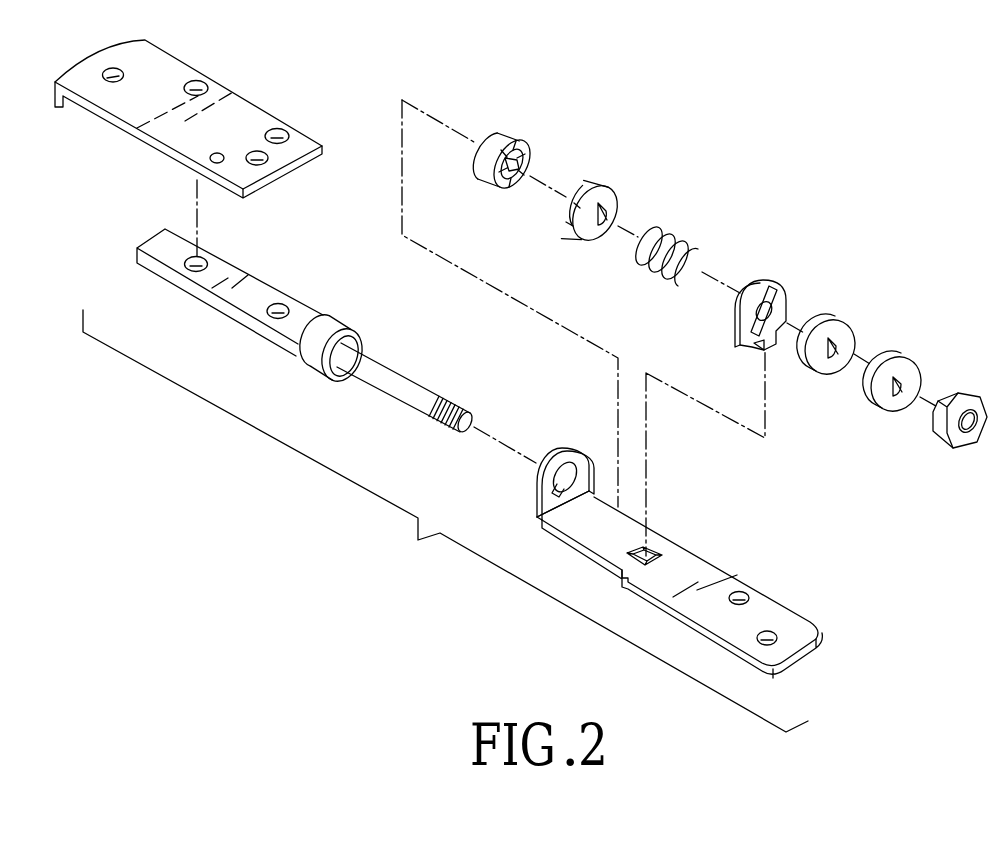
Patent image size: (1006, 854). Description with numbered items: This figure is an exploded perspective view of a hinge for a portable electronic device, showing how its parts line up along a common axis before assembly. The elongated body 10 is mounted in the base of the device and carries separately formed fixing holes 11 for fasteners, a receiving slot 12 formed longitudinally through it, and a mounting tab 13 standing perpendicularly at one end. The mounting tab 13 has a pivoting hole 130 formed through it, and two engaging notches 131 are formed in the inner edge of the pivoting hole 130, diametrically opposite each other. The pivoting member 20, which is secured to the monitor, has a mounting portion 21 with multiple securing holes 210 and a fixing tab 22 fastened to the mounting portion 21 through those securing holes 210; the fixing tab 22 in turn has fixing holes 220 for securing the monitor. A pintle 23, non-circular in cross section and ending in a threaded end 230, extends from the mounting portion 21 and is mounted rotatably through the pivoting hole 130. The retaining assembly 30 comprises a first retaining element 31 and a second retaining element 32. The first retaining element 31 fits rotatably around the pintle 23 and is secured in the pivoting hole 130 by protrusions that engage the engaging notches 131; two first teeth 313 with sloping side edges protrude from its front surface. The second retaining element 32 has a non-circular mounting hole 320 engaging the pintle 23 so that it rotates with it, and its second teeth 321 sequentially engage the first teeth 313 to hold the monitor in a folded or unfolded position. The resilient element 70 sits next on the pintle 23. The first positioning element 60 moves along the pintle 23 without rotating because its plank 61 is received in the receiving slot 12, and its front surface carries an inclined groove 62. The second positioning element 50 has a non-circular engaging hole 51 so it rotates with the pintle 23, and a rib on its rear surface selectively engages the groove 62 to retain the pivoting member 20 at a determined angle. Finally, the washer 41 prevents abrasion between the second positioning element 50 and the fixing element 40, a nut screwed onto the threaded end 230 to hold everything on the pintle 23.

The body 10 is at (784, 620).
The fixing holes 11 is at (745, 596).
The receiving slot 12 is at (652, 552).
The mounting tab 13 is at (566, 450).
The pivoting hole 130 is at (556, 488).
The engaging notches 131 is at (552, 524).
The pivoting member 20 is at (312, 362).
The mounting portion 21 is at (216, 302).
The securing holes 210 is at (205, 262).
The fixing tab 22 is at (230, 104).
The fixing holes 220 is at (104, 71).
The pintle 23 is at (385, 388).
The threaded end 230 is at (438, 427).
The retaining assembly 30 is at (623, 138).
The first retaining element 31 is at (505, 132).
The first teeth 313 is at (519, 143).
The second retaining element 32 is at (600, 188).
The mounting hole 320 is at (608, 214).
The second teeth 321 is at (566, 221).
The fixing element 40 is at (940, 438).
The washer 41 is at (906, 358).
The second positioning element 50 is at (838, 322).
The engaging hole 51 is at (836, 345).
The first positioning element 60 is at (765, 284).
The plank 61 is at (762, 345).
The groove 62 is at (777, 300).
The resilient element 70 is at (692, 248).